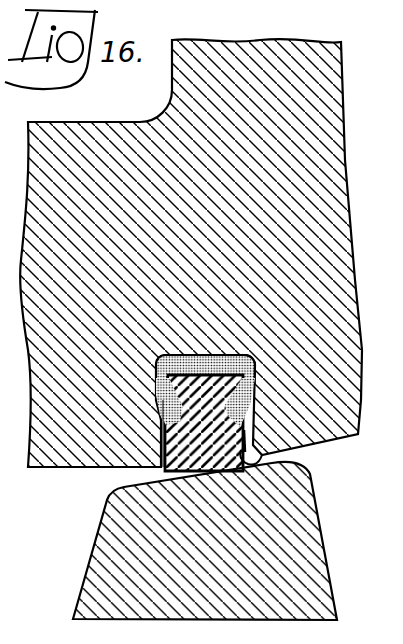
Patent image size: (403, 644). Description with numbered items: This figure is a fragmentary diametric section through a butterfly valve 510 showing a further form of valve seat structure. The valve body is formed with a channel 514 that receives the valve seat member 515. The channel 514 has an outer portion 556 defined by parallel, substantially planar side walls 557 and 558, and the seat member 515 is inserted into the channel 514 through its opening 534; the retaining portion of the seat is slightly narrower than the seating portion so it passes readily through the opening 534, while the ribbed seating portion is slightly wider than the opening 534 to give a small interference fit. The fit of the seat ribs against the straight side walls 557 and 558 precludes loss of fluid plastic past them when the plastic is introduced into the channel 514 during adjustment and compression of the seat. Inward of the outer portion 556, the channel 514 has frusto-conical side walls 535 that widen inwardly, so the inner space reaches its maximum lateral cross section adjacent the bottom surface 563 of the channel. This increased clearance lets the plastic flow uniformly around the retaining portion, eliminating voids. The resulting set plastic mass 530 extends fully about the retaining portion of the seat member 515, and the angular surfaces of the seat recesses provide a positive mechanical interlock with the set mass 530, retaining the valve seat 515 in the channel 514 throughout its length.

The valve 510 is at (248, 83).
The channel 514 is at (218, 357).
The valve seat member 515 is at (145, 473).
The set plastic mass 530 is at (185, 359).
The channel opening 534 is at (266, 449).
The frusto-conical side walls 535 is at (160, 393).
The outer portion of channel 556 is at (191, 471).
The side wall 557 is at (236, 472).
The side wall 558 is at (165, 436).
The bottom surface of channel 563 is at (244, 354).